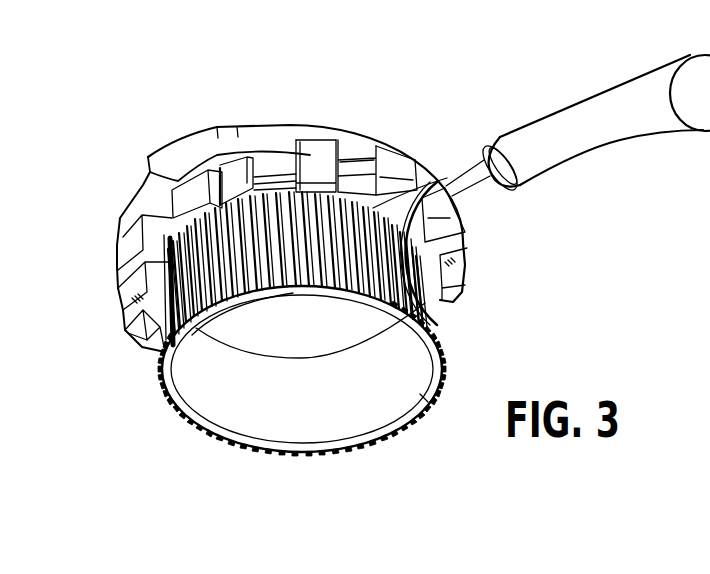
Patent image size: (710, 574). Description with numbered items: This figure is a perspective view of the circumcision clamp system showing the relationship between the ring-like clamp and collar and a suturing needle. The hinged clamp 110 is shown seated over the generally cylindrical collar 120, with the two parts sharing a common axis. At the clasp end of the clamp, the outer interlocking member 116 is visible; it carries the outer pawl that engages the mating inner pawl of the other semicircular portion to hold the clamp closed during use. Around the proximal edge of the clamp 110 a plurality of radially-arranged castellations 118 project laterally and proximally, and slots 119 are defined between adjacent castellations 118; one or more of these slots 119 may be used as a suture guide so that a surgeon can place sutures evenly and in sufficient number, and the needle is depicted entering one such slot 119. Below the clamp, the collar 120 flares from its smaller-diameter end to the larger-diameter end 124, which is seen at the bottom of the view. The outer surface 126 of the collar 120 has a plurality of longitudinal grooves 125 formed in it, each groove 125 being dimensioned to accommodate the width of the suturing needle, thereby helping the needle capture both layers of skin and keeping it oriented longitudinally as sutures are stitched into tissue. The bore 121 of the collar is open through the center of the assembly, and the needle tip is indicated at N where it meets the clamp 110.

The hinged clamp 110 is at (453, 145).
The outer interlocking member 116 is at (248, 135).
The castellations 118 is at (312, 167).
The slots 119 is at (358, 170).
The collar 120 is at (383, 440).
The bore 121 is at (234, 410).
The end 124 is at (423, 398).
The longitudinal grooves 125 is at (418, 335).
The outer surface 126 is at (150, 340).
The nose N is at (403, 239).